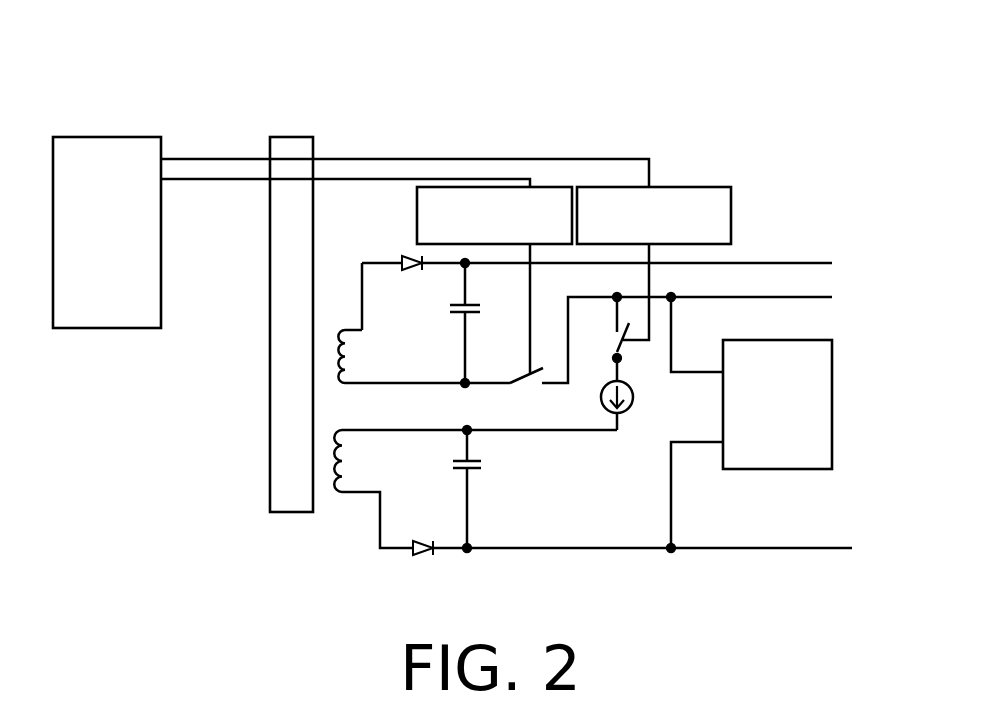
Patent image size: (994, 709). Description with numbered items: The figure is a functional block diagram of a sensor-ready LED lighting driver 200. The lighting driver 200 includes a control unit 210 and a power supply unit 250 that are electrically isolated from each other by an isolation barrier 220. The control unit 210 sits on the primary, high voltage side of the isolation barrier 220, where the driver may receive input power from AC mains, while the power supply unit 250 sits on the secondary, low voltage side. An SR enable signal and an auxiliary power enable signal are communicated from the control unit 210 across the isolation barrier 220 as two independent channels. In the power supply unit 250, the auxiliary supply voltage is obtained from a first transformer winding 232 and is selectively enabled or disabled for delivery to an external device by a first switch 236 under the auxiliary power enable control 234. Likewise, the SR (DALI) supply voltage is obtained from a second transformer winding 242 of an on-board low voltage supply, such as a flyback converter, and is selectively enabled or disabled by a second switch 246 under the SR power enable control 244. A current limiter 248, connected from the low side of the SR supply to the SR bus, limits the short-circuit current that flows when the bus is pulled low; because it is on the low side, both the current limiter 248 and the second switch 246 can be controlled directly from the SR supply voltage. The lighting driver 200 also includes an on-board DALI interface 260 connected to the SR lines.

The lighting driver 200 is at (936, 36).
The control unit 210 is at (108, 137).
The isolation barrier 220 is at (290, 137).
The first transformer winding 232 is at (401, 356).
The auxiliary power enable control 234 is at (417, 213).
The first switch 236 is at (541, 325).
The second transformer winding 242 is at (373, 489).
The SR power enable control 244 is at (731, 213).
The second switch 246 is at (616, 303).
The current limiter 248 is at (624, 394).
The power supply unit 250 is at (679, 151).
The DALI interface 260 is at (832, 398).